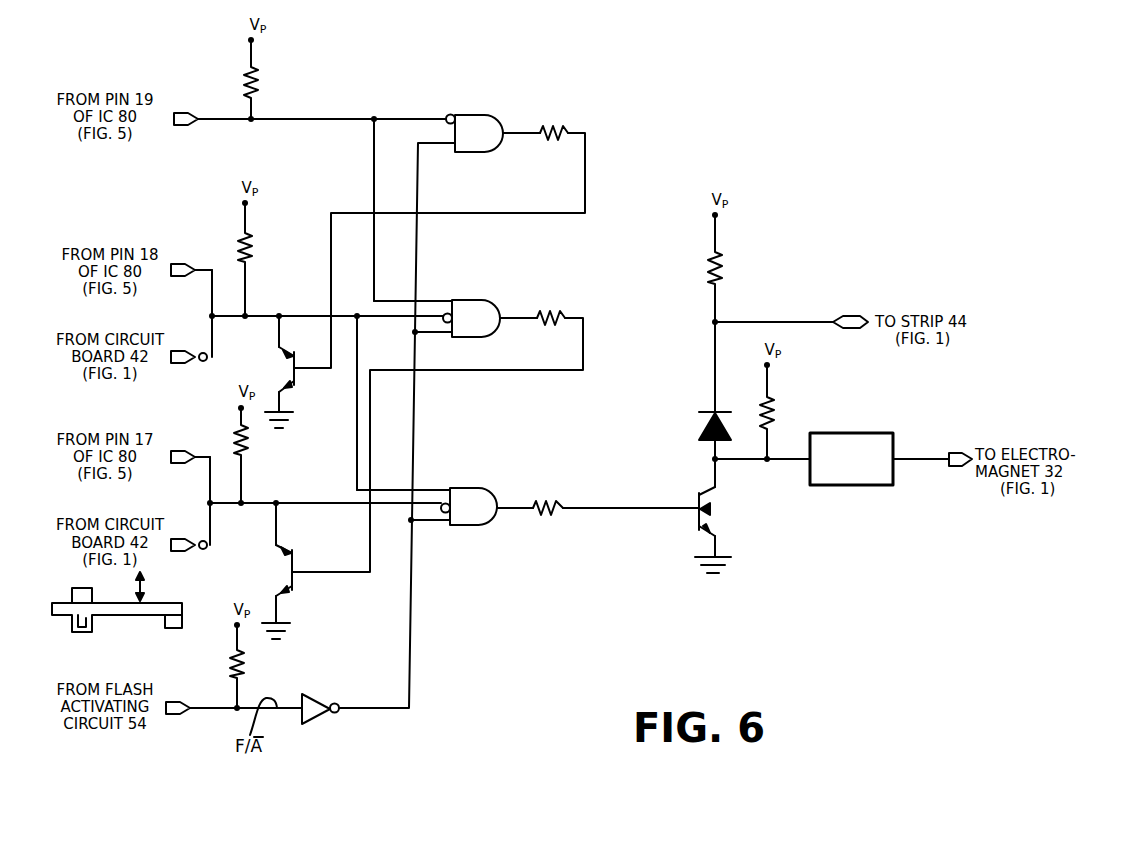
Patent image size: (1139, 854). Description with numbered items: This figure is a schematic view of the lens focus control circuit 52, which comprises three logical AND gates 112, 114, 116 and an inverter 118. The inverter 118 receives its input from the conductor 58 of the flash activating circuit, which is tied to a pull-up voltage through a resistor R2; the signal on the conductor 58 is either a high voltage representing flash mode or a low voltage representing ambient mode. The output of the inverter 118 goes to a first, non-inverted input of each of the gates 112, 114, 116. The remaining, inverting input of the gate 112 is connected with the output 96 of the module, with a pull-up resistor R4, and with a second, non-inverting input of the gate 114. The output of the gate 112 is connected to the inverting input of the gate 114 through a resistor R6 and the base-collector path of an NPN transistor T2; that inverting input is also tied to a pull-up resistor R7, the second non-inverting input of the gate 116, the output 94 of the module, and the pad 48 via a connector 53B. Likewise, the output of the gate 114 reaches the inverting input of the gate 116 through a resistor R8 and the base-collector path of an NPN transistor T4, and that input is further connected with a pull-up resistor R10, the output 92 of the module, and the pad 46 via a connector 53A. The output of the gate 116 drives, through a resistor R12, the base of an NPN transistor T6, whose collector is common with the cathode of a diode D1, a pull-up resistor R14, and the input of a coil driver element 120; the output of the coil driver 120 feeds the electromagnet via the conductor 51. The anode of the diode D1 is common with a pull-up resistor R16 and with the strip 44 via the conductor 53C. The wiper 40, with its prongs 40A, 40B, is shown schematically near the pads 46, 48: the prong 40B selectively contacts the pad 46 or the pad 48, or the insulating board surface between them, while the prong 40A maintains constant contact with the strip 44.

The lens focus control circuit 52 is at (383, 59).
The output of module 80 96 is at (189, 112).
The output of module 80 94 is at (183, 263).
The output of module 80 92 is at (177, 452).
The pad 48 is at (180, 366).
The pad 46 is at (176, 554).
The conductor 58 is at (175, 716).
The connector 53A is at (203, 551).
The connector 53B is at (205, 362).
The conductor 53C is at (851, 315).
The conductor 51 is at (958, 451).
The logical AND gate 112 is at (479, 120).
The logical AND gate 114 is at (461, 300).
The logical AND gate 116 is at (461, 498).
The inverter 118 is at (313, 705).
The coil driver element 120 is at (855, 432).
The wiper 40 is at (122, 610).
The prong 40A is at (72, 620).
The prong 40B is at (175, 630).
The strip 44 is at (80, 633).
The pull-up resistor R4 is at (258, 72).
The pull-up resistor R7 is at (255, 249).
The pull-up resistor R10 is at (248, 444).
The resistor R2 is at (246, 659).
The resistor R6 is at (553, 126).
The resistor R8 is at (554, 310).
The resistor R12 is at (543, 498).
The pull-up resistor R16 is at (725, 262).
The pull-up resistor R14 is at (773, 404).
The NPN transistor T2 is at (288, 370).
The NPN transistor T4 is at (278, 567).
The NPN transistor T6 is at (709, 512).
The diode D1 is at (700, 433).